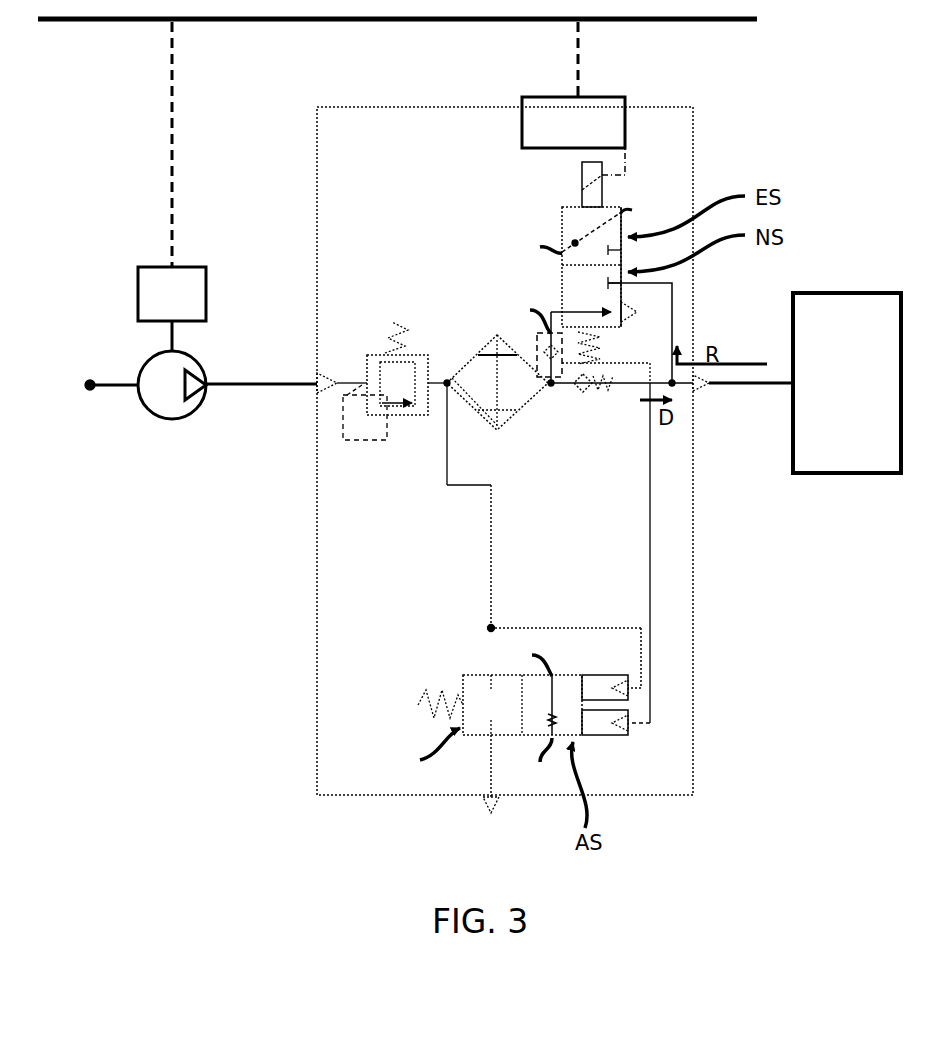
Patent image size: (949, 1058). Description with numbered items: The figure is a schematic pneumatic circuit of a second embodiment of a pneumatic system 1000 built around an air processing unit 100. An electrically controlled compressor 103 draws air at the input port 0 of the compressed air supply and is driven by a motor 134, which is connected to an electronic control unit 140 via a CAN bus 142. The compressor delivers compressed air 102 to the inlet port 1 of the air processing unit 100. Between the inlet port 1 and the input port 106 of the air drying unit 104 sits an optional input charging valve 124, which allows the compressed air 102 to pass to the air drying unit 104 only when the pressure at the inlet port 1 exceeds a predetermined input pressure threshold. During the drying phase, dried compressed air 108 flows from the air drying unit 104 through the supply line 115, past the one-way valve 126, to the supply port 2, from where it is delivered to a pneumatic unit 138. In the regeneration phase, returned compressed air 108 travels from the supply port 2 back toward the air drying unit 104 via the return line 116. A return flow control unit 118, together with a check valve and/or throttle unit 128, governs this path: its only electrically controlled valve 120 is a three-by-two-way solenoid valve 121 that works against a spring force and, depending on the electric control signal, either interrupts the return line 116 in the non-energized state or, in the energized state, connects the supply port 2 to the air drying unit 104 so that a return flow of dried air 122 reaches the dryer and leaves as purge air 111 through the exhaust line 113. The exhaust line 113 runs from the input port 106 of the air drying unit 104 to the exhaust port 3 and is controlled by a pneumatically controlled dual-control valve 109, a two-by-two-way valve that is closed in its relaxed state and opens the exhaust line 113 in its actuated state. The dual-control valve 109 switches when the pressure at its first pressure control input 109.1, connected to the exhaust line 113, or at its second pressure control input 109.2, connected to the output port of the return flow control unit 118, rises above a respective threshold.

The pneumatic system 1000 is at (866, 86).
The CAN bus 142 is at (97, 22).
The motor 134 is at (138, 270).
The compressor 103 is at (138, 376).
The input port of compressed air supply 0 is at (90, 390).
The inlet port 1 is at (316, 378).
The air processing unit 100 is at (316, 137).
The electronic control unit 140 is at (521, 101).
The compressed air 102 is at (347, 378).
The input charging valve 124 is at (400, 417).
The input port of air drying unit 106 is at (446, 381).
The air drying unit 104 is at (491, 333).
The return flow control unit 118 is at (556, 200).
The electrically controlled valve 120 is at (560, 240).
The 3/2-way solenoid valve 121 is at (560, 240).
The return line 116 is at (690, 299).
The return flow of dried air 122 is at (680, 322).
The check valve and/or throttle unit 128 is at (551, 392).
The supply line 115 is at (562, 392).
The one-way valve 126 is at (598, 392).
The supply port 2 is at (702, 392).
The dried compressed air 108 is at (775, 400).
The pneumatic unit 138 is at (848, 475).
The purge air 111 is at (486, 531).
The exhaust line 113 is at (492, 495).
The pneumatically controlled dual-control valve 109 is at (465, 673).
The first pressure control input 109.1 is at (592, 668).
The second pressure control input 109.2 is at (620, 740).
The exhaust port 3 is at (482, 803).